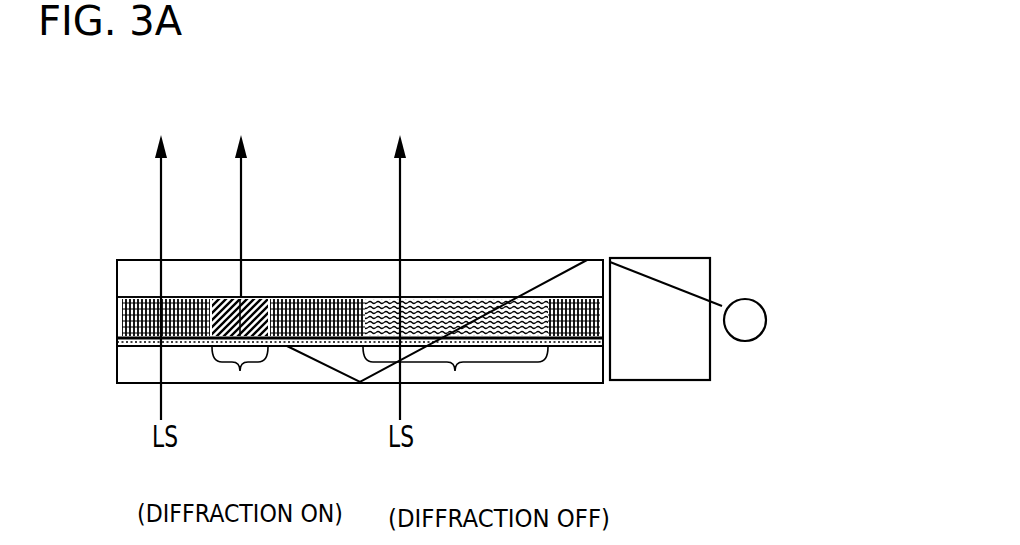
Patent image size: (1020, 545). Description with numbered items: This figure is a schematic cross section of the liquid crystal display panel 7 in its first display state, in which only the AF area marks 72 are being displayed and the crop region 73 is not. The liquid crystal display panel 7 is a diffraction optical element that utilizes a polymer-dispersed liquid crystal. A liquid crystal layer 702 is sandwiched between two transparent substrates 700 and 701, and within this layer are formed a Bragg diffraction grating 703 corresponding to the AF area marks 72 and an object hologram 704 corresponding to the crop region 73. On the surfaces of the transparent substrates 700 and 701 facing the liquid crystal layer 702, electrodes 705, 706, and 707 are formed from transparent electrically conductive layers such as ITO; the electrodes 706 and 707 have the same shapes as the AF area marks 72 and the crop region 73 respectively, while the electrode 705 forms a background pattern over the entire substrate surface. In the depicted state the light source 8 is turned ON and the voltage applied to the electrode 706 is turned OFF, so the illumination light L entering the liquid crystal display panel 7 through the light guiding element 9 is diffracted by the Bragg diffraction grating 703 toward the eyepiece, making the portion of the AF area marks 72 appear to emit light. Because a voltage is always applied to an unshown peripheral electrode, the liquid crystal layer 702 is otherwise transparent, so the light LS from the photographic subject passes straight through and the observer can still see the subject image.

The liquid crystal display panel 7 is at (580, 247).
The light source 8 is at (752, 300).
The light guiding element 9 is at (660, 258).
The AF area marks 72 is at (241, 384).
The crop region 73 is at (455, 384).
The transparent substrate 700 is at (143, 372).
The transparent substrate 701 is at (130, 280).
The liquid crystal layer 702 is at (143, 320).
The Bragg diffraction grating 703 is at (216, 297).
The object hologram 704 is at (528, 346).
The electrode 705 is at (572, 346).
The electrode 706 is at (263, 297).
The electrode 707 is at (490, 297).